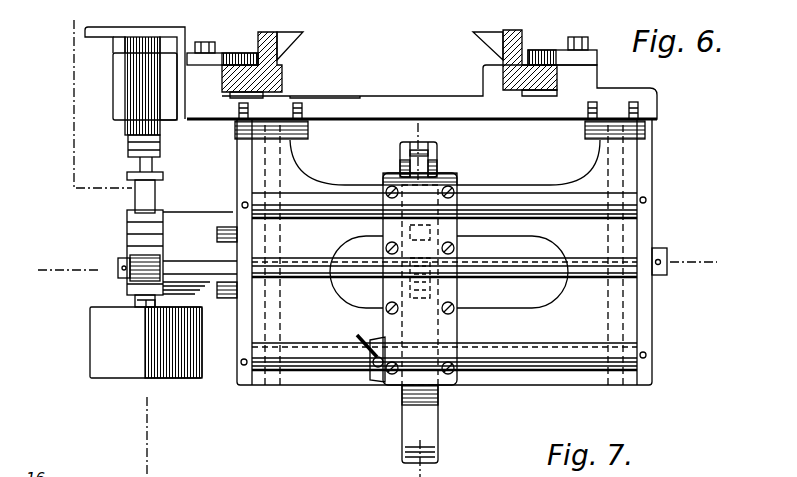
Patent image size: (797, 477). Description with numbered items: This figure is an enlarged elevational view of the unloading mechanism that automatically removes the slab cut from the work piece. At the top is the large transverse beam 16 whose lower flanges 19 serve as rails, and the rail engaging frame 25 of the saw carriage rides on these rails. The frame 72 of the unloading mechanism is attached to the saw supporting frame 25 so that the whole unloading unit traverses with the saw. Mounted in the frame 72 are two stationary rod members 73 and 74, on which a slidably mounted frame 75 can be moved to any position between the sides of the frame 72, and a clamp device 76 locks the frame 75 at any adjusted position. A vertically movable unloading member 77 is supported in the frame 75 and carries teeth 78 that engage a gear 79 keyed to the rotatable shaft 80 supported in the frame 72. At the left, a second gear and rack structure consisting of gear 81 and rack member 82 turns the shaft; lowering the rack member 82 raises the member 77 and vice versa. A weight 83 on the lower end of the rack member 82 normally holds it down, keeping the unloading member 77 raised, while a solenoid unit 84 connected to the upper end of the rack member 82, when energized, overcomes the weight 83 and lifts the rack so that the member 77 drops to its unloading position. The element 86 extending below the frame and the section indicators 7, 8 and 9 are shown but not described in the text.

In FIG. 6, the section line 7- 7 is at (78, 30).
In FIG. 6, the section line 8- 8 is at (436, 128).
In FIG. 6, the section line 9- 9 is at (52, 284).
In FIG. 6, the transverse beam 16 is at (522, 33).
In FIG. 6, the lower flanges 19 is at (280, 72).
In FIG. 6, the rail engaging frame 25 is at (625, 97).
In FIG. 6, the frame 72 is at (245, 162).
In FIG. 6, the stationary rod member 73 is at (543, 197).
In FIG. 6, the stationary rod member 74 is at (543, 363).
In FIG. 6, the slidably mounted frame 75 is at (458, 227).
In FIG. 6, the clamp device 76 is at (370, 372).
In FIG. 6, the vertically movable member 77 is at (435, 165).
In FIG. 6, the teeth 78 is at (457, 335).
In FIG. 6, the gear 79 is at (427, 285).
In FIG. 6, the rotatable shaft 80 is at (493, 270).
In FIG. 6, the gear 81 is at (143, 250).
In FIG. 6, the rack member 82 is at (142, 227).
In FIG. 6, the weight 83 is at (100, 345).
In FIG. 6, the solenoid unit 84 is at (113, 88).
In FIG. 7, the solenoid unit 84 is at (637, 476).
In FIG. 6, the carriage arm 86 is at (430, 428).